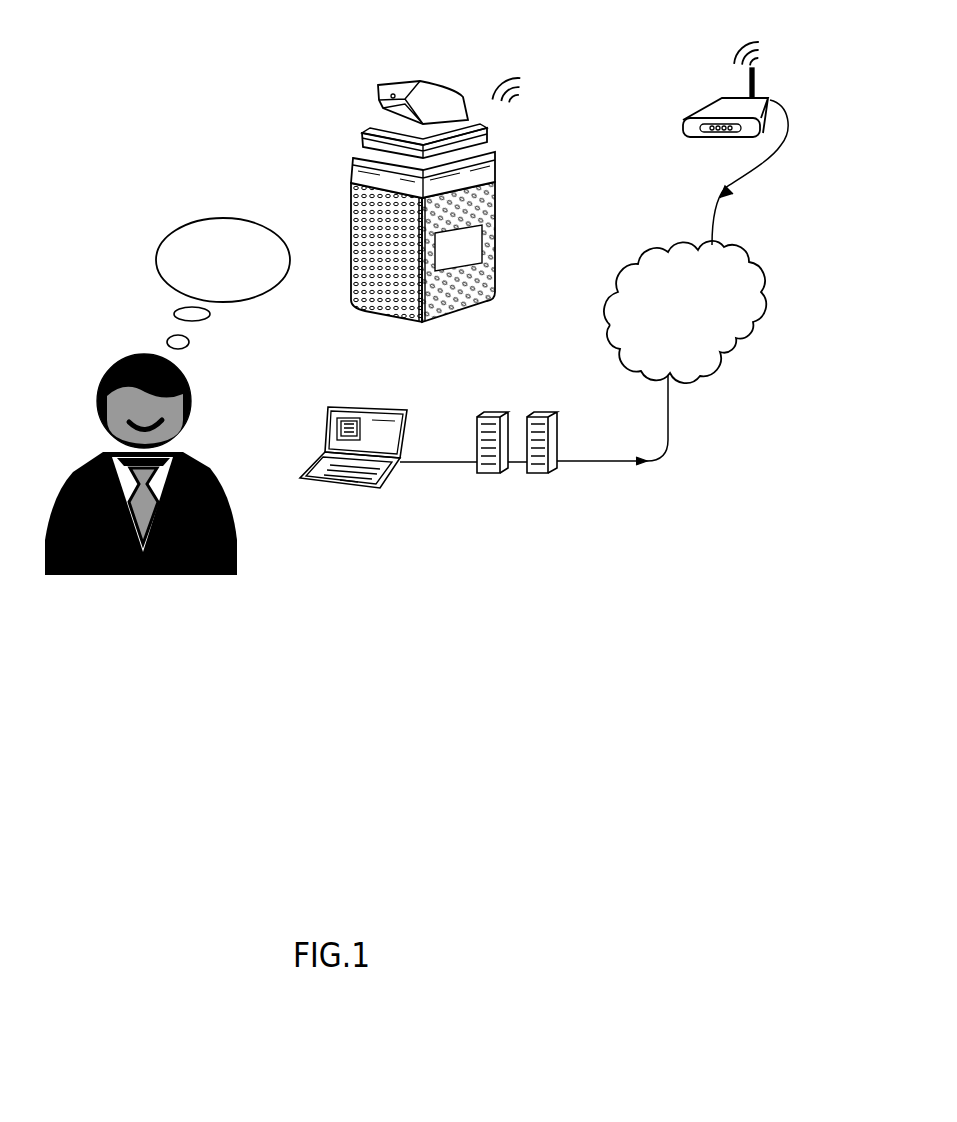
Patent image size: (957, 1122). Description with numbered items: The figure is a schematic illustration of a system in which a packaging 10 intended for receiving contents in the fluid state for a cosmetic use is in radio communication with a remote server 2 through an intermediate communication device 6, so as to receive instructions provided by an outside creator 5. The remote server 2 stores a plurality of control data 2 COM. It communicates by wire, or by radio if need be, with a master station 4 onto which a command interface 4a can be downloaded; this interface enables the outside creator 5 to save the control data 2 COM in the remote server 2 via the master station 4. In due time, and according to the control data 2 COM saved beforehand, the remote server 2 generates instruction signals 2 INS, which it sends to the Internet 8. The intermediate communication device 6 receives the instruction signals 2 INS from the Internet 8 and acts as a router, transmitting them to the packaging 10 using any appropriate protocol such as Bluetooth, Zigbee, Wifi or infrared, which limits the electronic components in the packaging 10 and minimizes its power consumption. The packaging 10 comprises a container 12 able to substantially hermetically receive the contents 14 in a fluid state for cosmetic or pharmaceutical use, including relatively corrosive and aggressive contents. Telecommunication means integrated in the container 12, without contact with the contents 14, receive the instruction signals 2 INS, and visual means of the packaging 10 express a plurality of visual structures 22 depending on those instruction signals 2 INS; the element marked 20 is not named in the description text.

The remote server 2 is at (490, 475).
The control data 2 COM is at (542, 432).
The instruction signals 2 INS is at (727, 190).
The master station 4 is at (356, 438).
The command interface 4a is at (340, 418).
The outside creator 5 is at (163, 572).
The intermediate communication device 6 is at (715, 112).
The Internet 8 is at (750, 330).
The packaging 10 is at (480, 202).
The container 12 is at (473, 285).
The contents 14 is at (483, 208).
The label 20 is at (493, 243).
The visual structures 22 is at (493, 267).